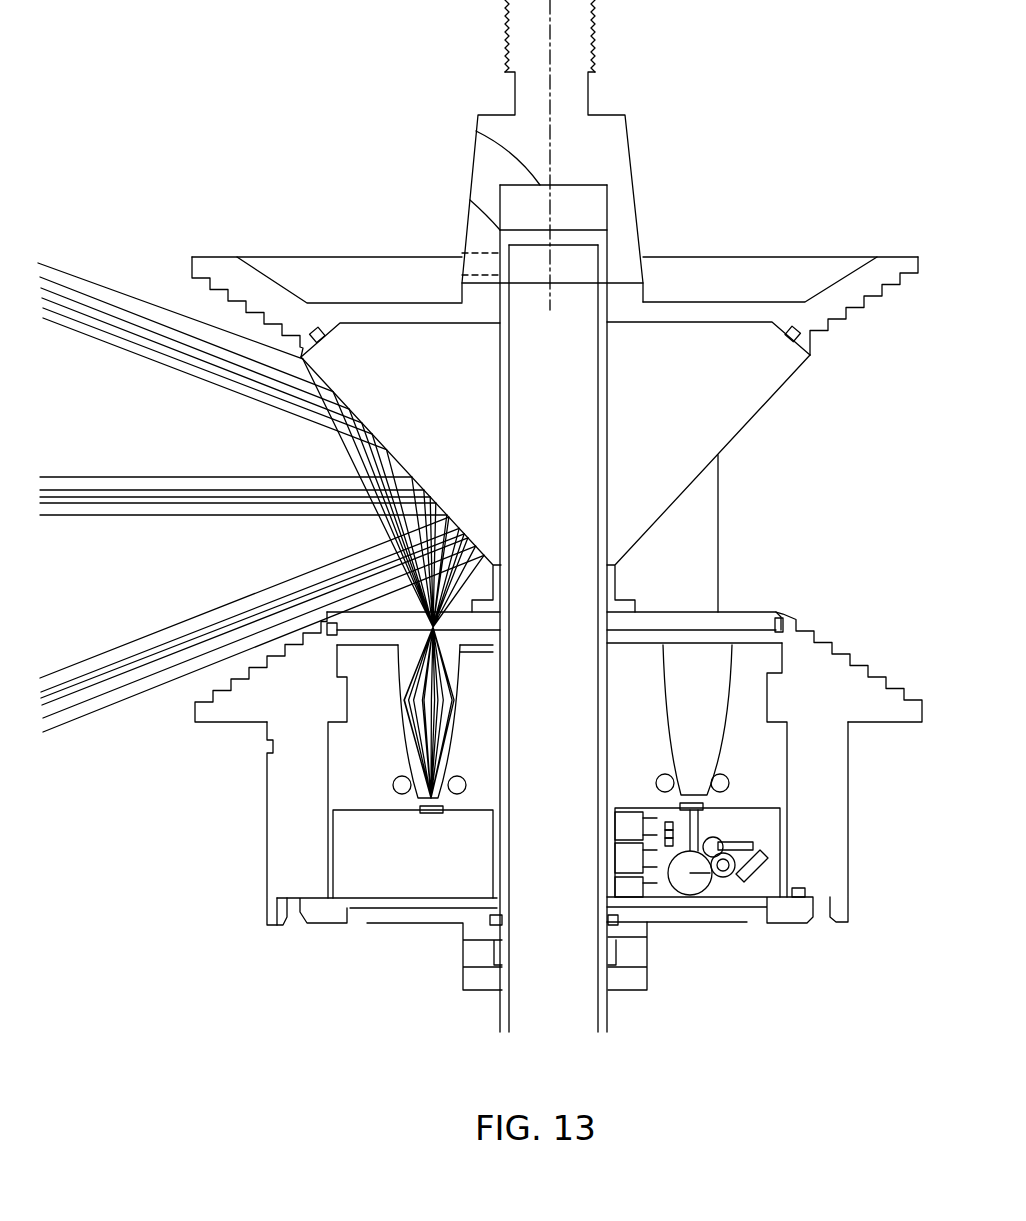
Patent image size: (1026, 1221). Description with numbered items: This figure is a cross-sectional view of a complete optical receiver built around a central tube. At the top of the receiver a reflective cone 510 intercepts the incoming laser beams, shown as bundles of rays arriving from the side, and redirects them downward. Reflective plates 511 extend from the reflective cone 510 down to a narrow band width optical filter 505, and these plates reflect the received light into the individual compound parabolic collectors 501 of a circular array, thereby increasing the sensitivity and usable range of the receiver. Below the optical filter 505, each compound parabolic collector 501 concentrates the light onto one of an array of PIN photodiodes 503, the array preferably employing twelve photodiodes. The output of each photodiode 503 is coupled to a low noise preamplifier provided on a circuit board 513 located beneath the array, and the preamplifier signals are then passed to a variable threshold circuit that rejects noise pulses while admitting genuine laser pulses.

The compound parabolic collector 501 is at (672, 753).
The PIN photodiode 503 is at (426, 822).
The narrow band width optical filter 505 is at (772, 598).
The reflective cone 510 is at (763, 408).
The reflective plate 511 is at (730, 496).
The circuit board 513 is at (755, 892).